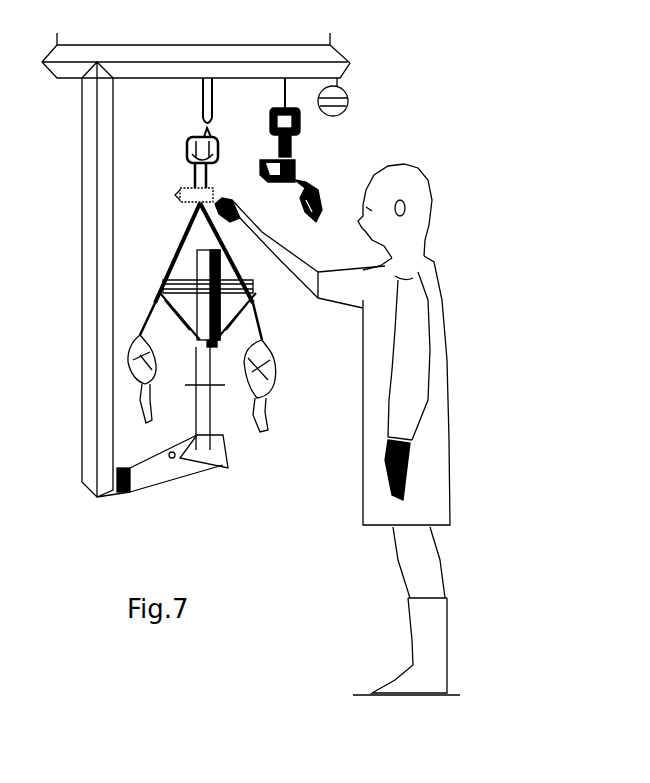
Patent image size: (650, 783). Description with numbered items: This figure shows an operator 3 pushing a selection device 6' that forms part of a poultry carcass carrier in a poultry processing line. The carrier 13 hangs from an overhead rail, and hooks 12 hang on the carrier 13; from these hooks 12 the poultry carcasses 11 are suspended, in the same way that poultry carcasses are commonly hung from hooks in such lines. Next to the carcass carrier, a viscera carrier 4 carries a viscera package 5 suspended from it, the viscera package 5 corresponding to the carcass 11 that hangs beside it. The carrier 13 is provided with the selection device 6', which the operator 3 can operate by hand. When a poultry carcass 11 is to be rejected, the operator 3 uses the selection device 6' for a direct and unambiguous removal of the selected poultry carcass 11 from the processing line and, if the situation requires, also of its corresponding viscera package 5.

The operator 3 is at (444, 314).
The viscera carrier 4 is at (306, 132).
The viscera package 5 is at (327, 184).
The selection device 6' is at (213, 162).
The poultry carcass 11 is at (131, 372).
The hook 12 is at (150, 302).
The carrier 13 is at (186, 146).